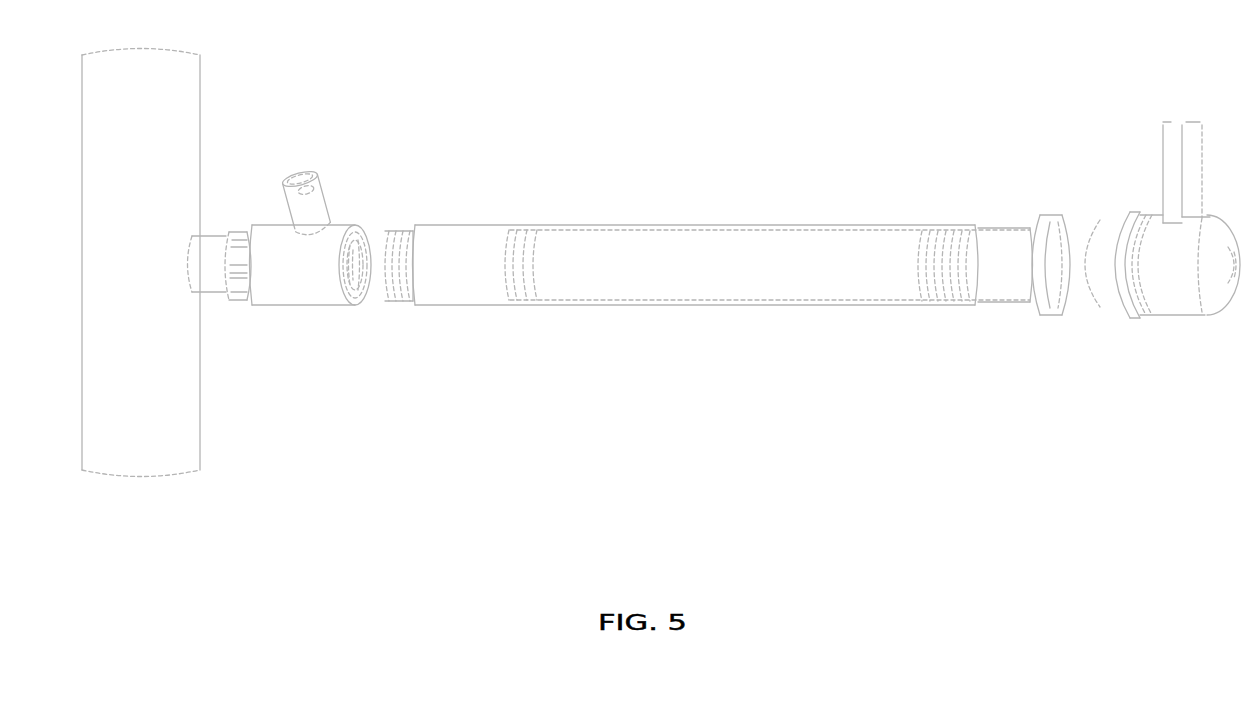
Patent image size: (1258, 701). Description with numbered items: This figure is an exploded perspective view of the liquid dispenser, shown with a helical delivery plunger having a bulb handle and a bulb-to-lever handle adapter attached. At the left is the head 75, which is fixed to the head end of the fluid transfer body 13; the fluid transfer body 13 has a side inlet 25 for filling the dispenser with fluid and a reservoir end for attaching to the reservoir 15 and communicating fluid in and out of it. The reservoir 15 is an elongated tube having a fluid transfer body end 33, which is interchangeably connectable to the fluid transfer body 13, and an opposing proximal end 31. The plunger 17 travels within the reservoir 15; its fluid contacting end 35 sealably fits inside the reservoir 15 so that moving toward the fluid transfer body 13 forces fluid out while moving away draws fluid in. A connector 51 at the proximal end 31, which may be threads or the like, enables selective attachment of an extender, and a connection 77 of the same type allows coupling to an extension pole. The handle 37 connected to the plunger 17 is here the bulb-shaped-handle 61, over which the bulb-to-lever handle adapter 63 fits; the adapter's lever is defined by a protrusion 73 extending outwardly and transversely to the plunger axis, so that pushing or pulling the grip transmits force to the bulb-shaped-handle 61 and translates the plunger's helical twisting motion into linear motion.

The fluid transfer body 13 is at (314, 254).
The reservoir 15 is at (709, 259).
The plunger 17 is at (697, 245).
The side inlet 25 is at (315, 172).
The proximal end 31 is at (982, 306).
The fluid transfer body end 33 is at (400, 306).
The fluid contacting end 35 is at (505, 292).
The handle 37 is at (1141, 242).
The connector 51 is at (982, 228).
The bulb-shaped-handle 61 is at (1078, 225).
The bulb-to-lever handle adapter 63 is at (1208, 322).
The protrusion 73 is at (1205, 170).
The head 75 is at (201, 121).
The connection 77 is at (953, 230).